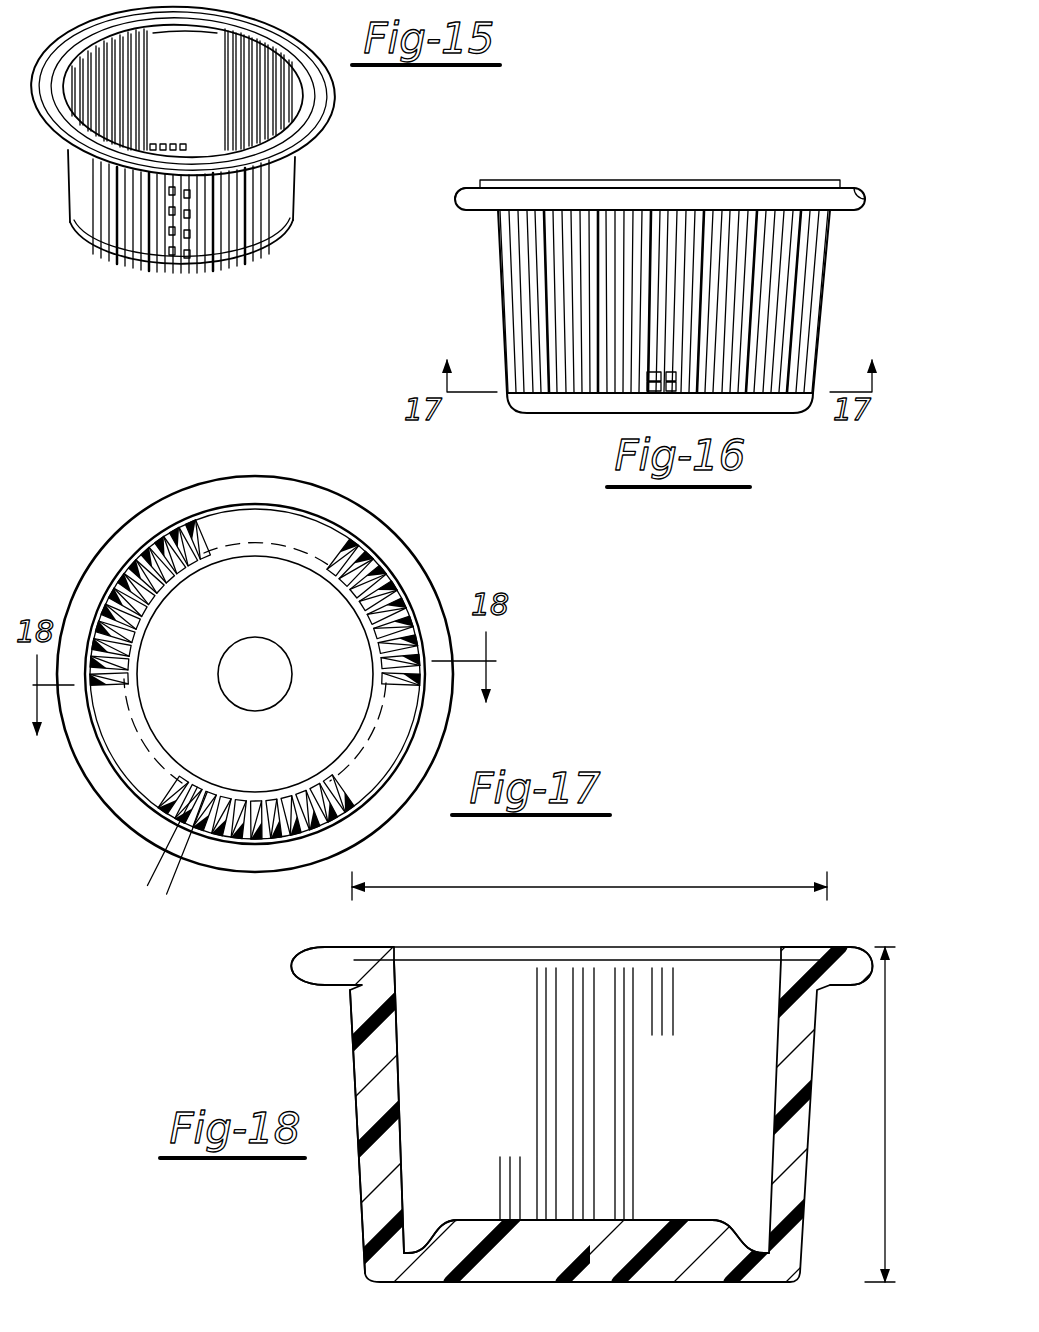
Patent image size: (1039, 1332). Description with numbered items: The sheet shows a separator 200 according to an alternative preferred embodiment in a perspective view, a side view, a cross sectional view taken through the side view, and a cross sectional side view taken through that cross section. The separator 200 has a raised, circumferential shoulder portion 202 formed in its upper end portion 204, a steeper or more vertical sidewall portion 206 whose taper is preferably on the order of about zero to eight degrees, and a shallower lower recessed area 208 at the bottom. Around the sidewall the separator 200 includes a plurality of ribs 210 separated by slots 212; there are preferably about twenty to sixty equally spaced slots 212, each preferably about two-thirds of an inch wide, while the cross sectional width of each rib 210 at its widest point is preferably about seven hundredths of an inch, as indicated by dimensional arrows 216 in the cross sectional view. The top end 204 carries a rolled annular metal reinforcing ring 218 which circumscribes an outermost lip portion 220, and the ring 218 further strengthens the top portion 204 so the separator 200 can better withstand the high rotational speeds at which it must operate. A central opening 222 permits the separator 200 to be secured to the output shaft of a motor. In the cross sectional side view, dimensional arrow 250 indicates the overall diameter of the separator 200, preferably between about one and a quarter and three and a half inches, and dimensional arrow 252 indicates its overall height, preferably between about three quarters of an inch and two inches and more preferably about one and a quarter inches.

In FIG. 15, the separator 200 is at (138, 282).
In FIG. 16, the separator 200 is at (667, 172).
In FIG. 17, the separator 200 is at (57, 558).
In FIG. 18, the separator 200 is at (755, 893).
In FIG. 15, the raised circumferential shoulder portion 202 is at (330, 104).
In FIG. 16, the raised circumferential shoulder portion 202 is at (830, 187).
In FIG. 18, the raised circumferential shoulder portion 202 is at (325, 947).
In FIG. 15, the upper end portion 204 is at (320, 143).
In FIG. 16, the upper end portion 204 is at (862, 215).
In FIG. 18, the upper end portion 204 is at (300, 989).
In FIG. 15, the sidewall portion 206 is at (284, 203).
In FIG. 16, the sidewall portion 206 is at (500, 292).
In FIG. 18, the lower recessed area 208 is at (672, 1250).
In FIG. 15, the ribs 210 is at (194, 248).
In FIG. 16, the ribs 210 is at (660, 390).
In FIG. 17, the ribs 210 is at (333, 788).
In FIG. 18, the ribs 210 is at (358, 1068).
In FIG. 15, the slots 212 is at (170, 272).
In FIG. 16, the slots 212 is at (667, 263).
In FIG. 17, the slots 212 is at (183, 531).
In FIG. 17, the dimensional arrows 216 is at (125, 850).
In FIG. 18, the rolled annular metal reinforcing ring 218 is at (868, 988).
In FIG. 18, the outermost lip portion 220 is at (850, 954).
In FIG. 17, the opening 222 is at (262, 645).
In FIG. 18, the opening 222 is at (655, 1232).
In FIG. 18, the dimensional arrow 250 is at (494, 889).
In FIG. 18, the dimensional arrow 252 is at (884, 1163).